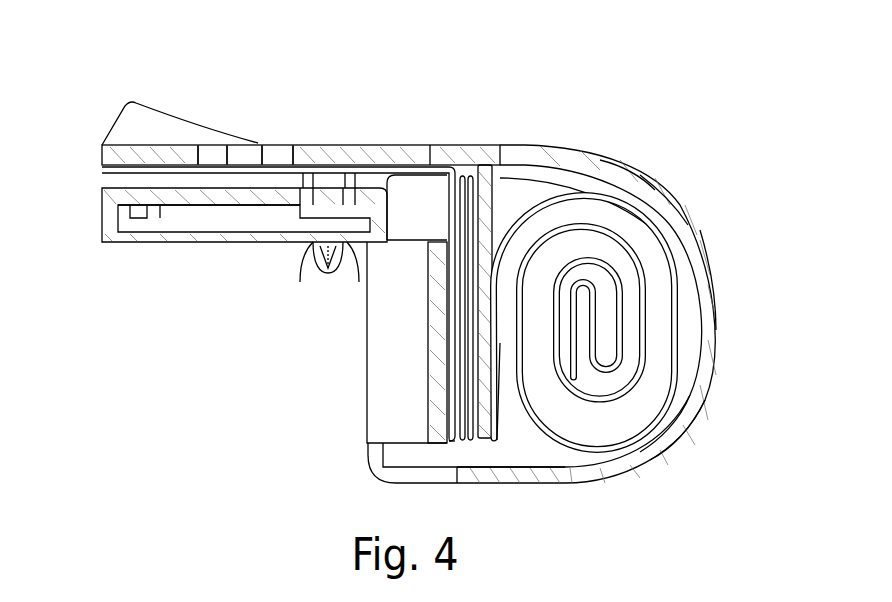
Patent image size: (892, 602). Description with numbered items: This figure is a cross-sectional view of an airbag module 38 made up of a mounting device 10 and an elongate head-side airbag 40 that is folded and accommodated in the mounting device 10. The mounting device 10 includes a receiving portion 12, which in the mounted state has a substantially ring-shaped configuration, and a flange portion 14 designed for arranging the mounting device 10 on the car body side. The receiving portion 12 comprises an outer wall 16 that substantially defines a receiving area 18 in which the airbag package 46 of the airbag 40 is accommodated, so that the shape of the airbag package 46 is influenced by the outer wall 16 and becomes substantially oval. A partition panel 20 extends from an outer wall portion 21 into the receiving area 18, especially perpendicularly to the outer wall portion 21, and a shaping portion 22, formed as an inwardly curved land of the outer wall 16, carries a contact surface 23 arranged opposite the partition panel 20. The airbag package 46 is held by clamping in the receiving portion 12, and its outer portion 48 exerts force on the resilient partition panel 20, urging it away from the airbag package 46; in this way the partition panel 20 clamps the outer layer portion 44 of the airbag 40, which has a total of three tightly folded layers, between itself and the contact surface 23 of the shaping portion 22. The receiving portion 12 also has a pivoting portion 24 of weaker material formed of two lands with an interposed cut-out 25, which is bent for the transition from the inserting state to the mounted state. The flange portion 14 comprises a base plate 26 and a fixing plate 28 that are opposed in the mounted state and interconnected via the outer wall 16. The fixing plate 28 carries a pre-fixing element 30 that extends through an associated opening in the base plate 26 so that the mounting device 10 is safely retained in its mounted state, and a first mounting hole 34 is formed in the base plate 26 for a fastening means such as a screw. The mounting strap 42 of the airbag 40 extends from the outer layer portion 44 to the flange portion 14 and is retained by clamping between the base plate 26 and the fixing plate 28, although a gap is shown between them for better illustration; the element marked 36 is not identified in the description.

The mounting device 10 is at (652, 163).
The receiving portion 12 is at (688, 205).
The flange portion 14 is at (316, 100).
The outer wall 16 is at (690, 245).
The receiving area 18 is at (493, 462).
The partition panel 20 is at (527, 197).
The outer wall portion 21 is at (494, 207).
The shaping portion 22 is at (385, 382).
The contact surface 23 is at (487, 447).
The pivoting portion 24 is at (693, 425).
The cut-out 25 is at (665, 445).
The base plate 26 is at (105, 222).
The fixing plate 28 is at (133, 155).
The pre-fixing element 30 is at (311, 250).
The first mounting hole 34 is at (240, 195).
The plate segment 36 is at (210, 150).
The airbag module 38 is at (625, 98).
The airbag 40 is at (542, 152).
The mounting strap 42 is at (277, 167).
The outer layer portion 44 is at (485, 217).
The airbag package 46 is at (648, 345).
The outer portion 48 is at (500, 343).